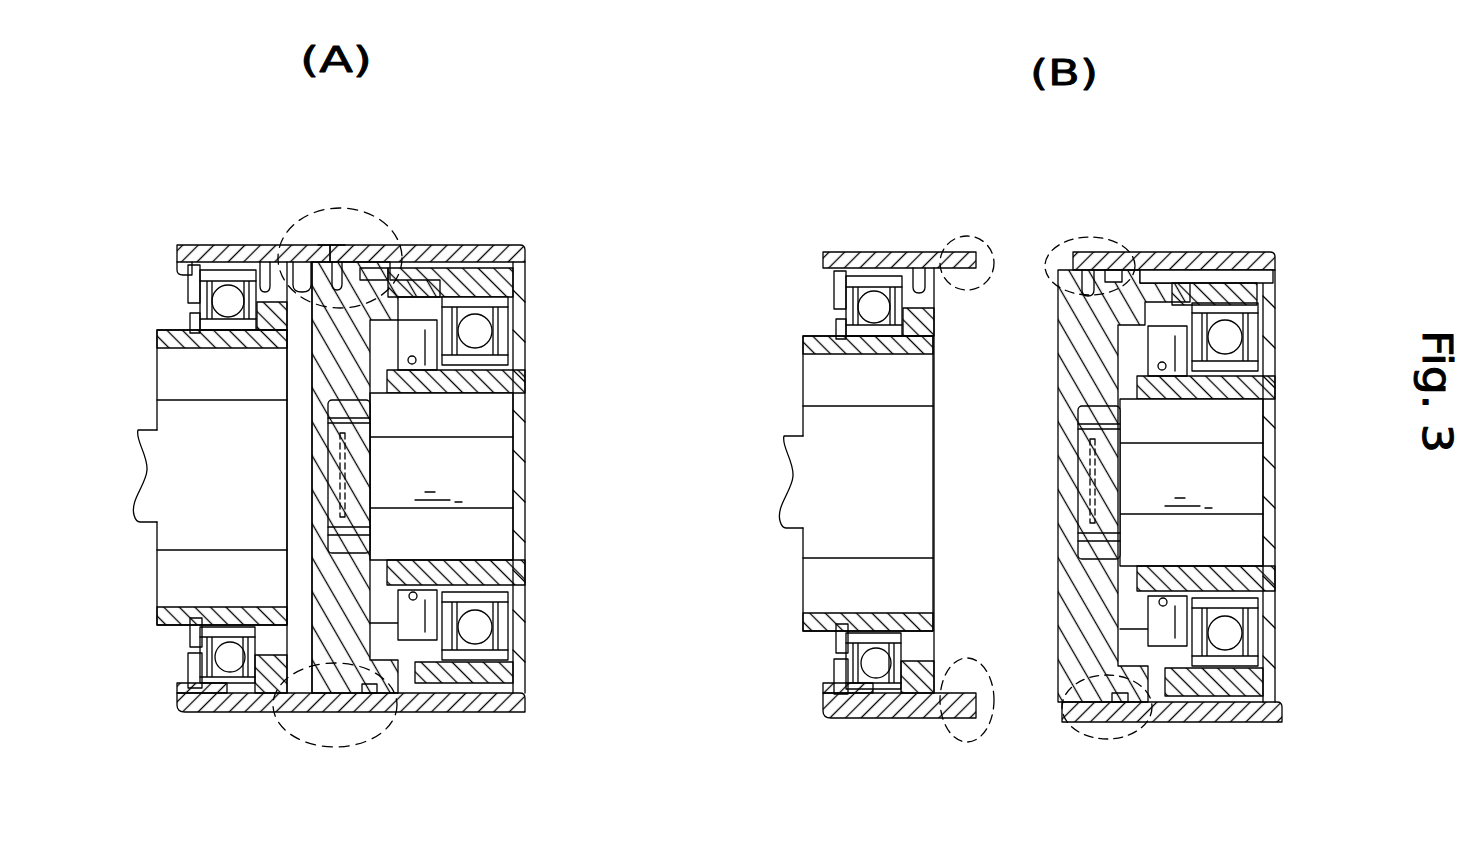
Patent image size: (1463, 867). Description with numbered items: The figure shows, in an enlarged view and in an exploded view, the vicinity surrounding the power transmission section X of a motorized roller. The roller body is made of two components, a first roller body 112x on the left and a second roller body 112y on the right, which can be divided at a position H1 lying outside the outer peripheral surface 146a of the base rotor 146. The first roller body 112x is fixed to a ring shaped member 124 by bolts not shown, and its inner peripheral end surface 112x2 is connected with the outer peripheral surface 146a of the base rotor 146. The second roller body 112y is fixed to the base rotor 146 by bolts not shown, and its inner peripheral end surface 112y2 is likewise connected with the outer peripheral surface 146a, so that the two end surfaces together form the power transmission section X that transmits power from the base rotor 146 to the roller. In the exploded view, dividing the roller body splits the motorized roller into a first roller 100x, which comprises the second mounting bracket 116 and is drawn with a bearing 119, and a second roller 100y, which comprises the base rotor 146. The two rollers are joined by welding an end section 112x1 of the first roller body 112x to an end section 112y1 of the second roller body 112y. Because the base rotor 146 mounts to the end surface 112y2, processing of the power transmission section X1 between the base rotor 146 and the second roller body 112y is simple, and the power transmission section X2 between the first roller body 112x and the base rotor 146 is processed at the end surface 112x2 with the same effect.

The ring shaped member 124 is at (180, 262).
The first roller body 112x is at (242, 247).
The inner peripheral end surface 112x2 is at (307, 277).
The dividing position H1 is at (328, 235).
The power transmission section X is at (380, 212).
The inner peripheral end surface 112y2 is at (414, 260).
The base rotor 146 is at (433, 290).
The second roller body 112y is at (513, 255).
The second mounting bracket 116 is at (175, 424).
The bearing 119 is at (223, 662).
The first roller 100x is at (923, 205).
The second roller 100y is at (1239, 225).
The power transmission section X1 is at (1099, 238).
The power transmission section X2 is at (975, 222).
The outer peripheral surface 146a is at (1156, 263).
The end section 112x1 is at (988, 712).
The end section 112y1 is at (1052, 713).